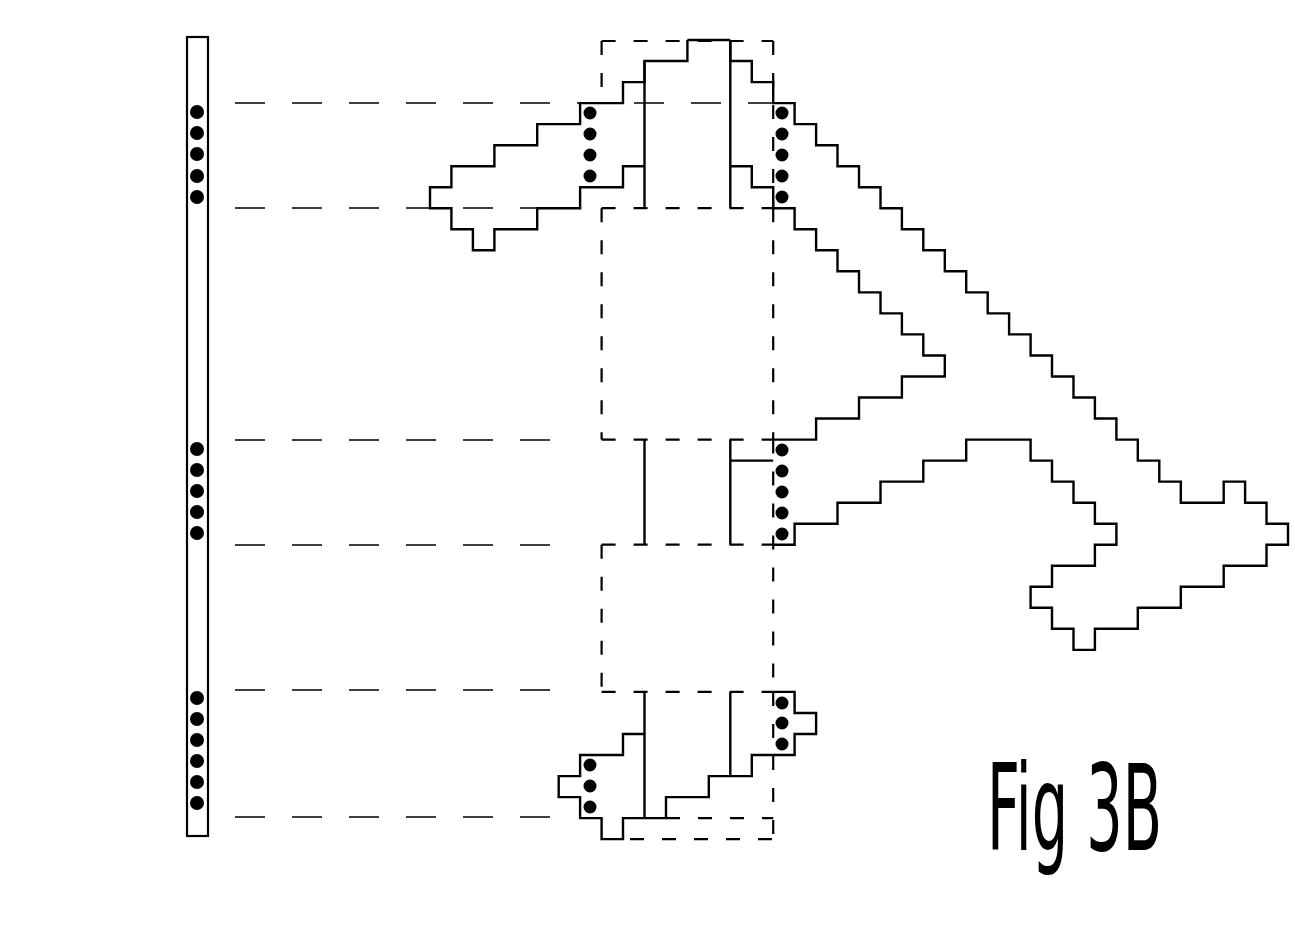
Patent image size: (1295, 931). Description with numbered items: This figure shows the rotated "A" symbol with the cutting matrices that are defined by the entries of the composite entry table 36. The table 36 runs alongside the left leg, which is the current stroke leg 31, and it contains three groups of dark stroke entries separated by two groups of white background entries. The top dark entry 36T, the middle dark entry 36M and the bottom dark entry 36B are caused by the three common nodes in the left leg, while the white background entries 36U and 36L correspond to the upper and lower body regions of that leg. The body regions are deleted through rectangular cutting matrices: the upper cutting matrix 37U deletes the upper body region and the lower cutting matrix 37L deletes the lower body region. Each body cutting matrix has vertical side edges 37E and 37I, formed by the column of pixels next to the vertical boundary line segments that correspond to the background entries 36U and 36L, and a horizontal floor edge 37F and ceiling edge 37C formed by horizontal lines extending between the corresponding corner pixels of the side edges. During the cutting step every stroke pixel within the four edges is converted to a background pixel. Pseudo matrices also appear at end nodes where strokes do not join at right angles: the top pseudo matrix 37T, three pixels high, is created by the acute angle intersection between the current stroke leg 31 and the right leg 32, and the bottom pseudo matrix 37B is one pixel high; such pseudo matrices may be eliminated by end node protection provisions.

The current stroke leg 31 is at (660, 510).
The right leg 32 is at (945, 308).
The composite entry table 36 is at (198, 66).
The top dark entry 36T is at (185, 155).
The upper white background entries 36U is at (185, 372).
The middle dark entry 36M is at (185, 489).
The lower white background entries 36L is at (185, 625).
The bottom dark entry 36B is at (185, 770).
The top pseudo matrix 37T is at (777, 48).
The ceiling edge 37C is at (700, 213).
The upper cutting matrix 37U is at (638, 323).
The vertical side edge 37I is at (770, 310).
The vertical side edge 37E is at (601, 338).
The floor edge 37F is at (700, 437).
The lower cutting matrix 37L is at (610, 635).
The bottom pseudo matrix 37B is at (777, 833).